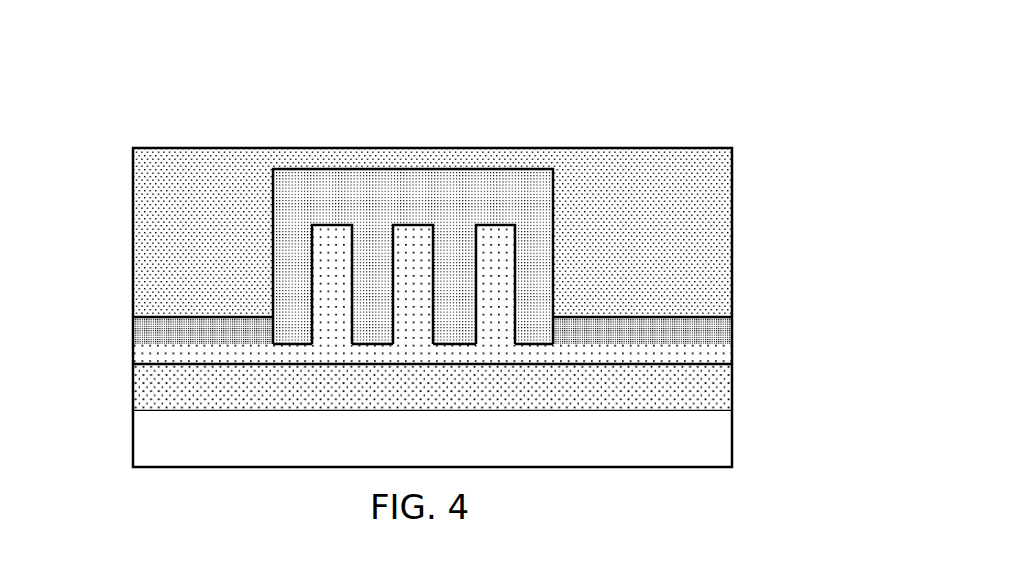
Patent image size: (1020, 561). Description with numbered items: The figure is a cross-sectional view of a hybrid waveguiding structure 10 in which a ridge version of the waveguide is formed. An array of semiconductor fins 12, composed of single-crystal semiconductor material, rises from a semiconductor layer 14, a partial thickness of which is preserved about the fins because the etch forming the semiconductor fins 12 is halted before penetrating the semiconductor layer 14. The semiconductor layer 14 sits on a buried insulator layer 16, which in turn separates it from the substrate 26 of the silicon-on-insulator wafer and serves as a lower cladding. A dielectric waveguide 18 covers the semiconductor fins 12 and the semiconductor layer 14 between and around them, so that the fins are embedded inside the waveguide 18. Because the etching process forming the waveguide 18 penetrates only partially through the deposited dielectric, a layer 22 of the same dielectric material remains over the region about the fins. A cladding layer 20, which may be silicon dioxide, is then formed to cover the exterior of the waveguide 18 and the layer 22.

The hybrid waveguiding structure 10 is at (146, 114).
The semiconductor fins 12 is at (325, 297).
The semiconductor layer 14 is at (150, 353).
The buried insulator layer 16 is at (713, 393).
The waveguide 18 is at (325, 203).
The cladding layer 20 is at (702, 202).
The layer 22 is at (700, 331).
The substrate 26 is at (150, 446).